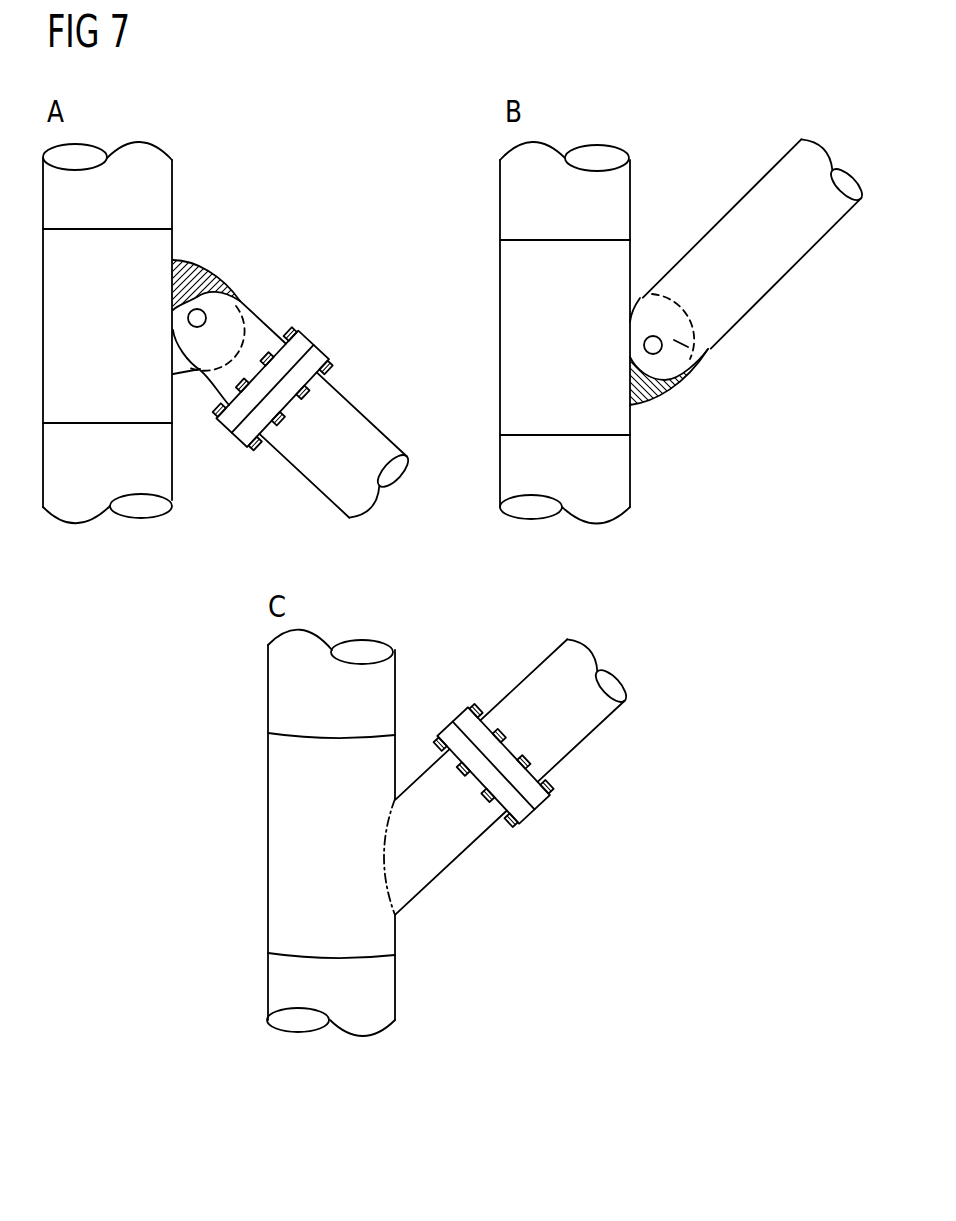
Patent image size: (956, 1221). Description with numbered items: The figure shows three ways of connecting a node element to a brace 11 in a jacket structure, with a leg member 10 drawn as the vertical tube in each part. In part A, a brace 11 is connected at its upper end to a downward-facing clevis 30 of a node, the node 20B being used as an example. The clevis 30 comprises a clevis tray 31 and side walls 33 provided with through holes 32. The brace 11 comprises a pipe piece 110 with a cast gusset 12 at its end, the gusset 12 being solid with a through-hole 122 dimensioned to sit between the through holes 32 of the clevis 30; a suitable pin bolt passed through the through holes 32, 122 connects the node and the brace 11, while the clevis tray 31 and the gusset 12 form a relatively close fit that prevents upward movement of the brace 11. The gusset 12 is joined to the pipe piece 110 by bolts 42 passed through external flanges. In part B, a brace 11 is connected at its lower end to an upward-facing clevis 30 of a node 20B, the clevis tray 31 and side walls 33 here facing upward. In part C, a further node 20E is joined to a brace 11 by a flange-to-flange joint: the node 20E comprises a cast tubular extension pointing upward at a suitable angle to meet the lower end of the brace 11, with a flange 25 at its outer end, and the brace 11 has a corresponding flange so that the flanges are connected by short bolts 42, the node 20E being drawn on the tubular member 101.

The first tube 10 is at (361, 333).
The brace 11 is at (525, 525).
The cast gusset 12 is at (263, 322).
The node 20B is at (97, 240).
The node 20E is at (331, 755).
The flange 25 is at (532, 800).
The clevis 30 is at (412, 334).
The clevis tray 31 is at (210, 272).
The through holes 32 is at (382, 332).
The side walls 33 is at (688, 343).
The bolts 42 is at (289, 332).
The tube section 101 is at (364, 833).
The pipe piece 110 is at (332, 444).
The through-hole 122 is at (188, 318).